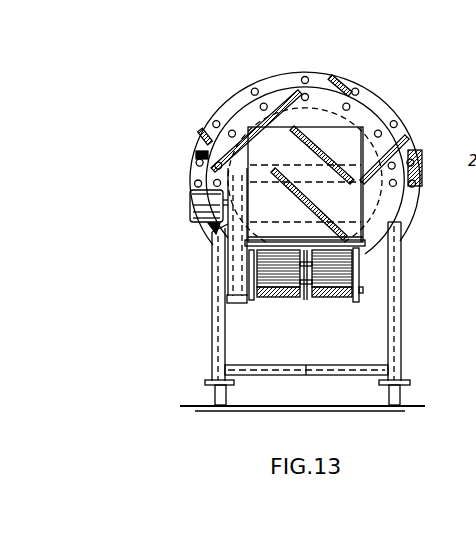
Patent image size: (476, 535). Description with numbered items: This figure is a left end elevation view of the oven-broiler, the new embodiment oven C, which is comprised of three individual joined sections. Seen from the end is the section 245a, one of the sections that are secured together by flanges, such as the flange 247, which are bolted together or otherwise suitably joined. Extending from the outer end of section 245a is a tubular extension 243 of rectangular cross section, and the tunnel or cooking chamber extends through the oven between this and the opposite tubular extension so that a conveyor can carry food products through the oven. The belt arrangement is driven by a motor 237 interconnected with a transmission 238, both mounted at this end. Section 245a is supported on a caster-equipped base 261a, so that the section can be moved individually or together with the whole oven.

The oven section 245a is at (278, 75).
The inner ring and bracing struts 247 is at (398, 113).
The oven C is at (395, 90).
The tubular extension 243 is at (250, 155).
The motor 237 is at (192, 199).
The transmission 238 is at (232, 258).
The caster-equipped base 261a is at (208, 323).